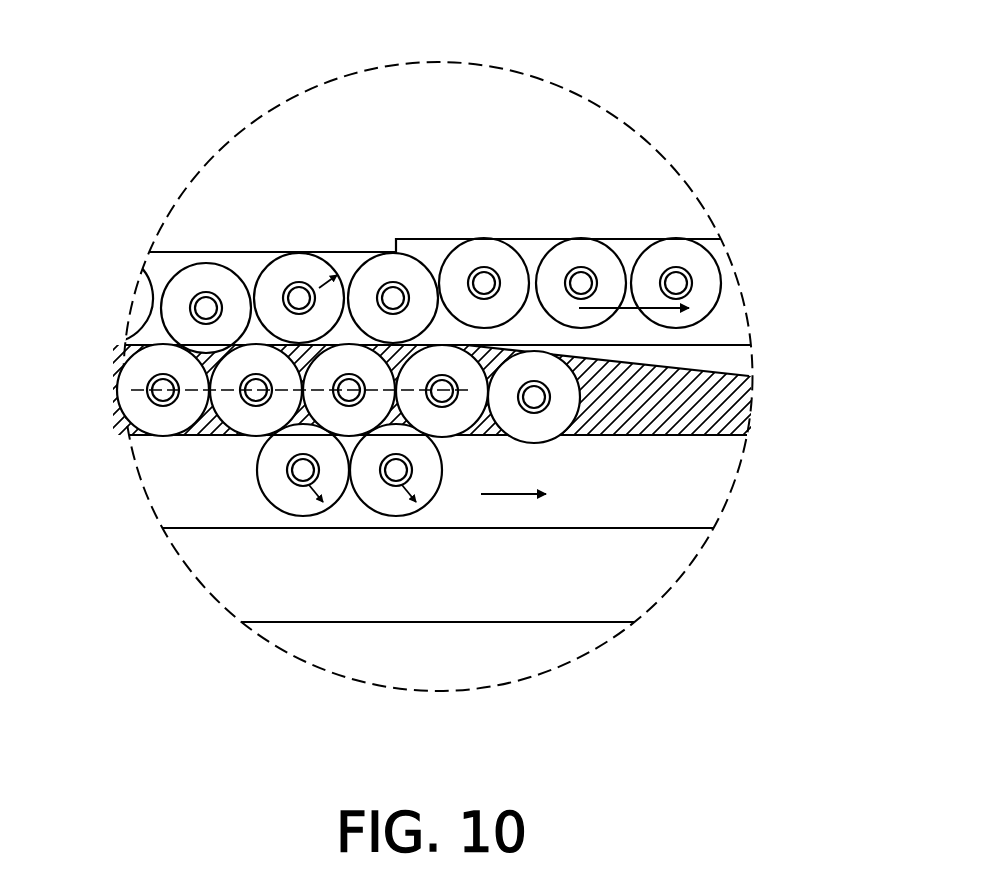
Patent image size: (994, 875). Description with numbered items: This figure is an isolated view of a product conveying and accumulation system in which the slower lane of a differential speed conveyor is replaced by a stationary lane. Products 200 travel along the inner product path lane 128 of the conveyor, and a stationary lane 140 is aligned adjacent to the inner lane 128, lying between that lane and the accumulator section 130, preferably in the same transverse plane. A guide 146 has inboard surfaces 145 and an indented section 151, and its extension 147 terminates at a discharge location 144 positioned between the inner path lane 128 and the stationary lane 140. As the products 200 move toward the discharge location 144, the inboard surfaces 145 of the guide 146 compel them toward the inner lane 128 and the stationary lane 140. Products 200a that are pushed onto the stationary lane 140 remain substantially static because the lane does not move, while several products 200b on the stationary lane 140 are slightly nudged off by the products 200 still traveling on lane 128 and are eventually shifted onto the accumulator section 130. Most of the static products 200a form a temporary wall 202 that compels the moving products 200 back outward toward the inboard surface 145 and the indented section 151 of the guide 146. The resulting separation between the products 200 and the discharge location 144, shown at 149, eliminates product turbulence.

The guide 146 is at (500, 112).
The inner product path lane 128 is at (158, 262).
The products 200 is at (163, 293).
The inboard surfaces 145 is at (345, 260).
The indented section 151 is at (395, 239).
The separation 149 is at (445, 323).
The discharge location 144 is at (478, 345).
The extension 147 is at (732, 359).
The stationary lane 140 is at (429, 390).
The temporary wall 202 is at (573, 427).
The products 200a is at (254, 431).
The products 200b is at (290, 497).
The accumulator section 130 is at (607, 588).